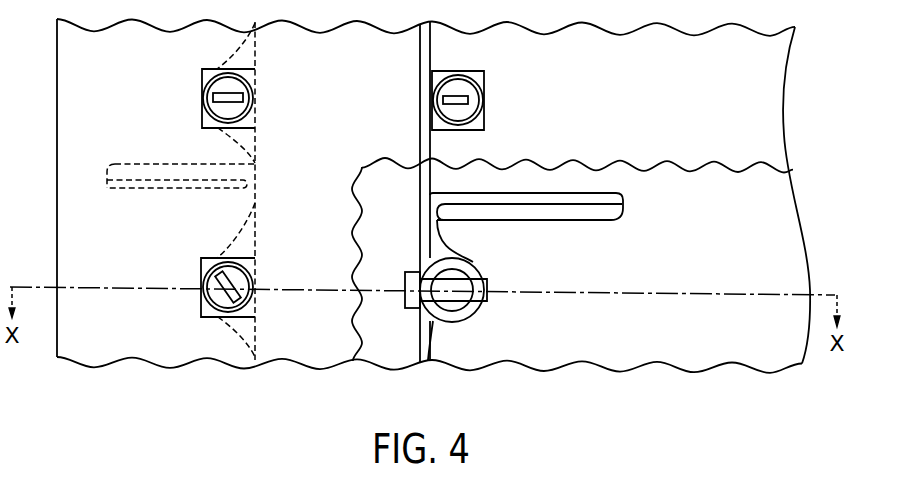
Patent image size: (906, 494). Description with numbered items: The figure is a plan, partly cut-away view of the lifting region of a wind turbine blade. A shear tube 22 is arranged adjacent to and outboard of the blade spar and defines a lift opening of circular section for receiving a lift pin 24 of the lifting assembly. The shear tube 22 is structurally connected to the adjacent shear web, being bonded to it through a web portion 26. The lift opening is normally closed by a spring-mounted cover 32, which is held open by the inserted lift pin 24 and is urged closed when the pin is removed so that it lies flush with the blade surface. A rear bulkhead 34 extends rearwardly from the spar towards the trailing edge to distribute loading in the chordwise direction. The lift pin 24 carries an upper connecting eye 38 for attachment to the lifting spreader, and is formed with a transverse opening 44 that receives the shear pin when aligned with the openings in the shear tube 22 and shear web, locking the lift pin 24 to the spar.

The shear tube 22 is at (471, 311).
The lift pin 24 is at (452, 308).
The web portion 26 is at (470, 320).
The spring-mounted cover 32 is at (138, 166).
The rear bulkhead 34 is at (559, 227).
The upper connecting eye 38 is at (465, 100).
The transverse opening 44 is at (481, 313).